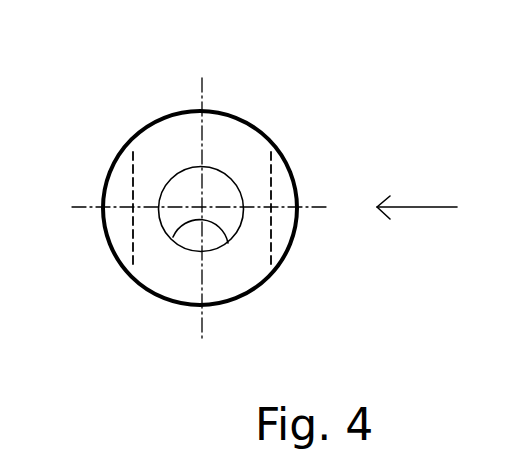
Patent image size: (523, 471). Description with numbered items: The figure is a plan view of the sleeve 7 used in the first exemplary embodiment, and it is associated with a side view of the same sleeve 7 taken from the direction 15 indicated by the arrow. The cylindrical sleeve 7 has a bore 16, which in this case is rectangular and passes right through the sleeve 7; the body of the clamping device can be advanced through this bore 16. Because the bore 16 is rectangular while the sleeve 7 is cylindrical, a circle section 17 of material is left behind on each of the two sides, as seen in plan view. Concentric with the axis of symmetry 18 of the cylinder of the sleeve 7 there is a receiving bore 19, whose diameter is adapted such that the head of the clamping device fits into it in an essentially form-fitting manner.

The sleeve 7 is at (245, 143).
The direction 15 is at (420, 207).
The bore 16 is at (196, 201).
The circle section 17 is at (115, 172).
The axis of symmetry 18 is at (228, 243).
The receiving bore 19 is at (173, 237).